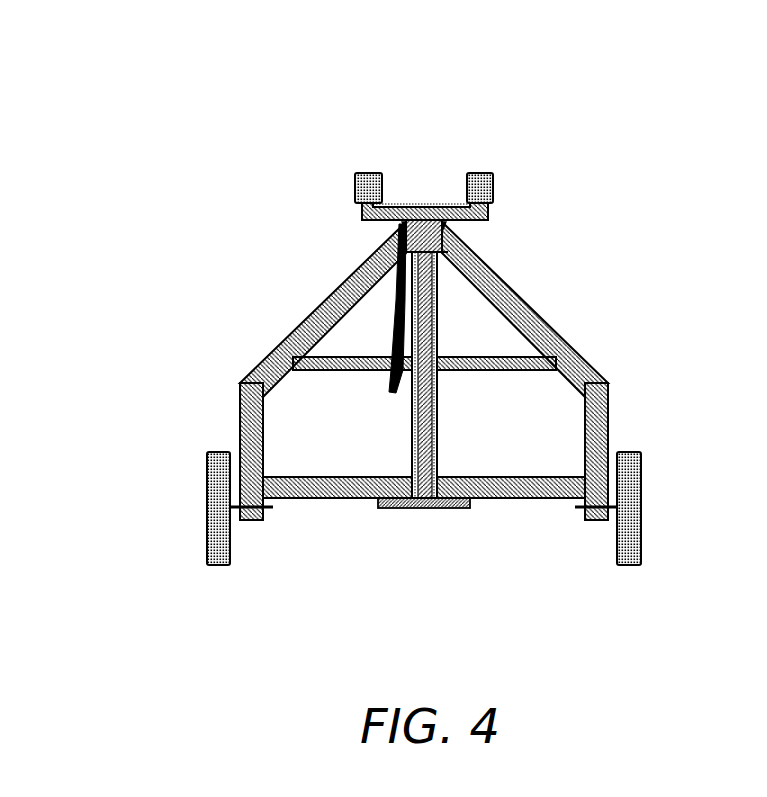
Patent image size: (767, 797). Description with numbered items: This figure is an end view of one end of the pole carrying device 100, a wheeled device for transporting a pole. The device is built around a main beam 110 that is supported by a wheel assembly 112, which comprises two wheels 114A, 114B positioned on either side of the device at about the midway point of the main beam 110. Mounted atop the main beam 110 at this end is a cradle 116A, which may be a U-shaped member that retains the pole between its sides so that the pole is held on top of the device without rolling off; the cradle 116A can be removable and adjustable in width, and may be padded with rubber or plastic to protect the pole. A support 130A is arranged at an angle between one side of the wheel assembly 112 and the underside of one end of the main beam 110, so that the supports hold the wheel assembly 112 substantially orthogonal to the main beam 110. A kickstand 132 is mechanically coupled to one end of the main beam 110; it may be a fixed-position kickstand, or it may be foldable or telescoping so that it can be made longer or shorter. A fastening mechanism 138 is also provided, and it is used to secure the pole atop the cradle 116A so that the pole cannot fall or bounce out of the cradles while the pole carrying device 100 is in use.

The pole carrying device 100 is at (197, 90).
The main beam 110 is at (424, 217).
The wheel assembly 112 is at (539, 291).
The wheel 114A is at (641, 541).
The wheel 114B is at (207, 538).
The cradle 116A is at (489, 160).
The support 130A is at (430, 437).
The kickstand 132 is at (466, 510).
The fastening mechanism 138 is at (395, 337).